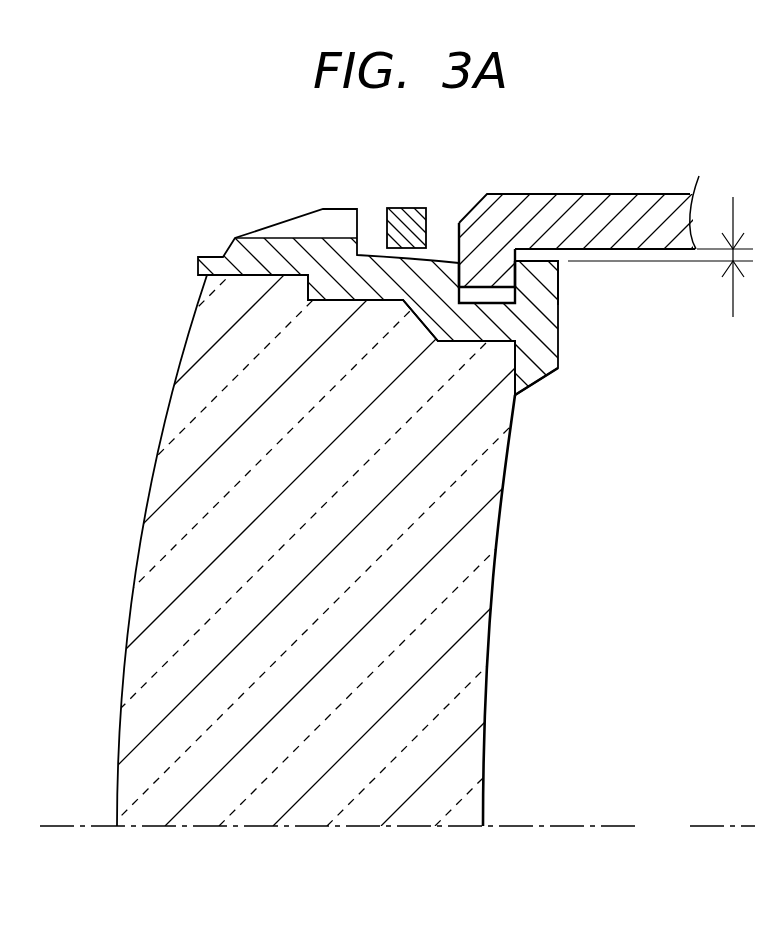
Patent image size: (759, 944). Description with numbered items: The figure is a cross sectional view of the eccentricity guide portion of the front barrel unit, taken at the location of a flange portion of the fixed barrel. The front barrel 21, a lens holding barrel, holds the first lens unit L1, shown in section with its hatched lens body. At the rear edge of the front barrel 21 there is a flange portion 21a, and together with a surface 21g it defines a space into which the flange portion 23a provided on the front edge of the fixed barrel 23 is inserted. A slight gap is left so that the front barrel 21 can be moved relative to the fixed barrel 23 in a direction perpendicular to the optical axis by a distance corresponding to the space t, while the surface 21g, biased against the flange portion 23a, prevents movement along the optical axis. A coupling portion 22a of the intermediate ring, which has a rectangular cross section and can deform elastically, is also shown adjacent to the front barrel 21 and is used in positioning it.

The first lens unit L1 is at (485, 637).
The front barrel 21 is at (560, 340).
The flange portion 21a is at (558, 281).
The surface 21g is at (460, 267).
The coupling portion 22a is at (397, 208).
The fixed barrel 23 is at (615, 194).
The flange portion 23a is at (492, 250).
The space t is at (660, 257).